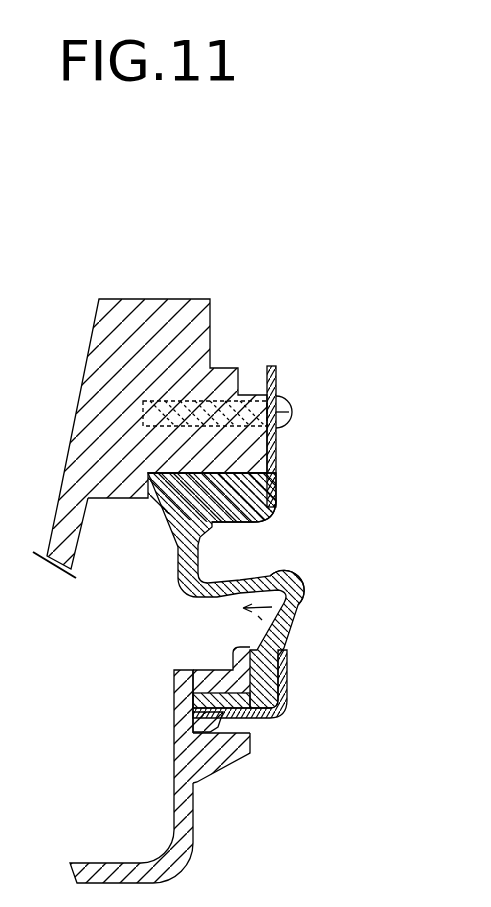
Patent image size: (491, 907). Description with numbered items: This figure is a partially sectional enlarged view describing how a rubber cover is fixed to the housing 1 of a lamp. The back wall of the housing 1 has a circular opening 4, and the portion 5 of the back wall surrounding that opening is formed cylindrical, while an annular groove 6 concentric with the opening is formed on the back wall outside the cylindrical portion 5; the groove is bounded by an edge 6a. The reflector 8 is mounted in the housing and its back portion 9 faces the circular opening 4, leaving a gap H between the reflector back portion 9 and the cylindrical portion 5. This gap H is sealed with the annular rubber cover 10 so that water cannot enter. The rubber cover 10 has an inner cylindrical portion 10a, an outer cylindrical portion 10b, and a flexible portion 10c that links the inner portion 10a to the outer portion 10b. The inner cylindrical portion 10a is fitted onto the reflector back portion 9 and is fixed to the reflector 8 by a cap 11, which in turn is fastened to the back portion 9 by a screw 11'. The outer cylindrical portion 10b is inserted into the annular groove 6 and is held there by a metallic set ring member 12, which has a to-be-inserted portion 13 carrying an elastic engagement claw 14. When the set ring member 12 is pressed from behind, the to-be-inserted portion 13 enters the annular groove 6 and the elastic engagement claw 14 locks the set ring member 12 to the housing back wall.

The housing 1 is at (194, 840).
The circular opening 4 is at (297, 610).
The cylindrical portion 5 is at (174, 680).
The annular groove 6 is at (252, 733).
The ledge end 6a is at (252, 742).
The reflector 8 is at (67, 507).
The back portion of the reflector 9 is at (188, 300).
The annular rubber cover 10 is at (258, 570).
The inner cylindrical portion 10a is at (258, 498).
The outer cylindrical portion 10b is at (205, 670).
The flexible portion 10c is at (287, 583).
The cap 11 is at (301, 436).
The screw 11' is at (261, 420).
The metallic set ring member 12 is at (288, 673).
The to-be-inserted portion 13 is at (227, 697).
The elastic engagement claw 14 is at (223, 721).
The gap H is at (260, 618).